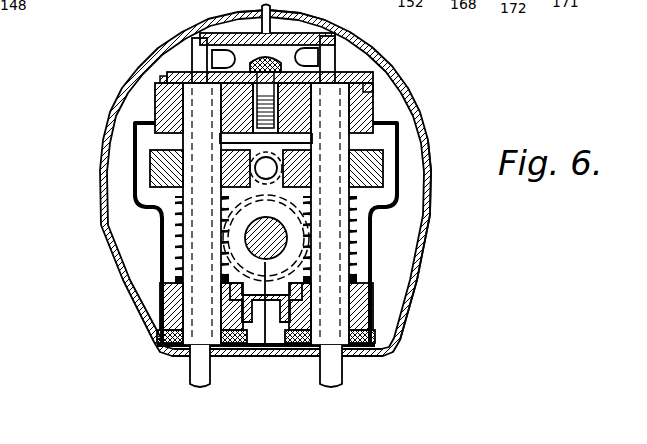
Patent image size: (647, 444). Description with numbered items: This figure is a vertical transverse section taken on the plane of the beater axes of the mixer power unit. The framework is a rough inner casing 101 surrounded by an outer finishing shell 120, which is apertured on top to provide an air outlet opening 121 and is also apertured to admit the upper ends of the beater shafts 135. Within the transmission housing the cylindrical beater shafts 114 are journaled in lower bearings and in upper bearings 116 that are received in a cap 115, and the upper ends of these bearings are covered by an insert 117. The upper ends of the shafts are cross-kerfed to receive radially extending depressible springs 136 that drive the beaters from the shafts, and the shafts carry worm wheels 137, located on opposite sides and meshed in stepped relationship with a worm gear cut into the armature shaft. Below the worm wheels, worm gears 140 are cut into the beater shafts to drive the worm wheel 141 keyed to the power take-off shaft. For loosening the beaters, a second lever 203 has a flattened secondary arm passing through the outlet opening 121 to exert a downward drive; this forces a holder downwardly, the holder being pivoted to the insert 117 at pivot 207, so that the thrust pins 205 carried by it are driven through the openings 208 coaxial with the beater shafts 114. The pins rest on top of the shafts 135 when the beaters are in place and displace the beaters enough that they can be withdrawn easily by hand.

The inner casing 101 is at (384, 292).
The beater shafts 114 is at (190, 200).
The cap 115 is at (172, 304).
The upper bearings 116 is at (374, 113).
The insert 117 is at (334, 82).
The outer finishing shell 120 is at (118, 271).
The outlet opening 121 is at (311, 14).
The beater shafts 135 is at (197, 369).
The depressible springs 136 is at (374, 90).
The worm wheels 137 is at (150, 177).
The worm gears 140 is at (182, 240).
The worm wheel 141 is at (266, 290).
The second lever 203 is at (261, 11).
The thrust pins 205 is at (200, 72).
The pivot 207 is at (322, 56).
The openings 208 is at (200, 70).